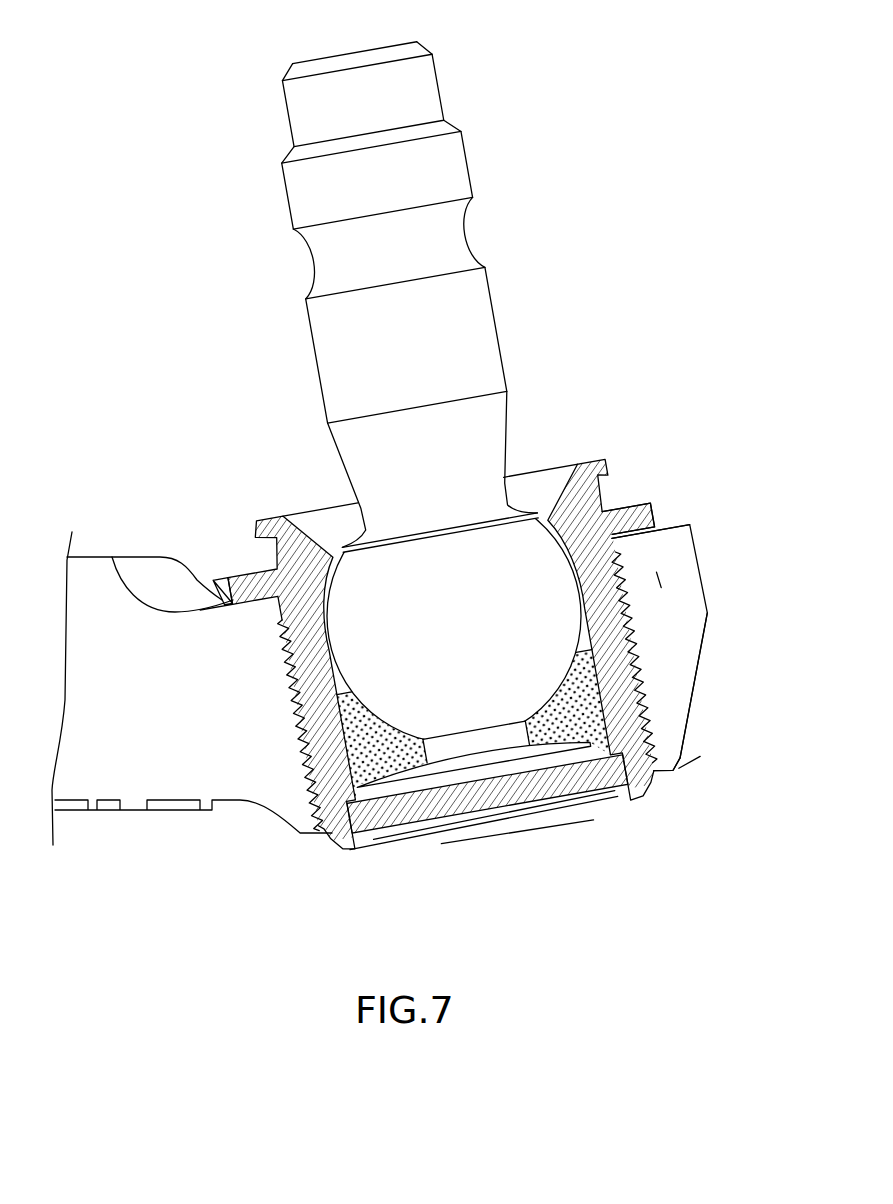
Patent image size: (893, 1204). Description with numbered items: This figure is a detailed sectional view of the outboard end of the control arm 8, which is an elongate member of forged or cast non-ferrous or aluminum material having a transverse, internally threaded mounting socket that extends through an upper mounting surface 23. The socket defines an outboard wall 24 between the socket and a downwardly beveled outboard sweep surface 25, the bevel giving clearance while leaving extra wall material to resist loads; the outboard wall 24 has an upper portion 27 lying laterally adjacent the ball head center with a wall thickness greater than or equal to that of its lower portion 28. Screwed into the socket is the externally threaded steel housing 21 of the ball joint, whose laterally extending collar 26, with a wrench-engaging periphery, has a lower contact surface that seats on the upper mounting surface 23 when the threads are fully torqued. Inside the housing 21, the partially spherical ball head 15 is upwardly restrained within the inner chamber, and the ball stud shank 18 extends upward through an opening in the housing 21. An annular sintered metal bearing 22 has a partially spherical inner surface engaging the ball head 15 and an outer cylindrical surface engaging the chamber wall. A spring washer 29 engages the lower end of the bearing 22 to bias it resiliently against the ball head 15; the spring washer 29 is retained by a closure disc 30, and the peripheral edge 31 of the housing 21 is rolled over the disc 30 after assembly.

The control arm 8 is at (132, 773).
The ball head 15 is at (476, 644).
The ball stud shank 18 is at (380, 114).
The housing 21 is at (594, 456).
The sintered metal bearing 22 is at (376, 750).
The upper mounting surface 23 is at (668, 526).
The outboard wall 24 is at (661, 585).
The beveled outboard sweep surface 25 is at (718, 651).
The collar 26 is at (241, 574).
The upper portion 27 is at (697, 540).
The lower portion 28 is at (682, 755).
The spring washer 29 is at (567, 748).
The closure disc 30 is at (458, 802).
The peripheral edge 31 is at (362, 850).